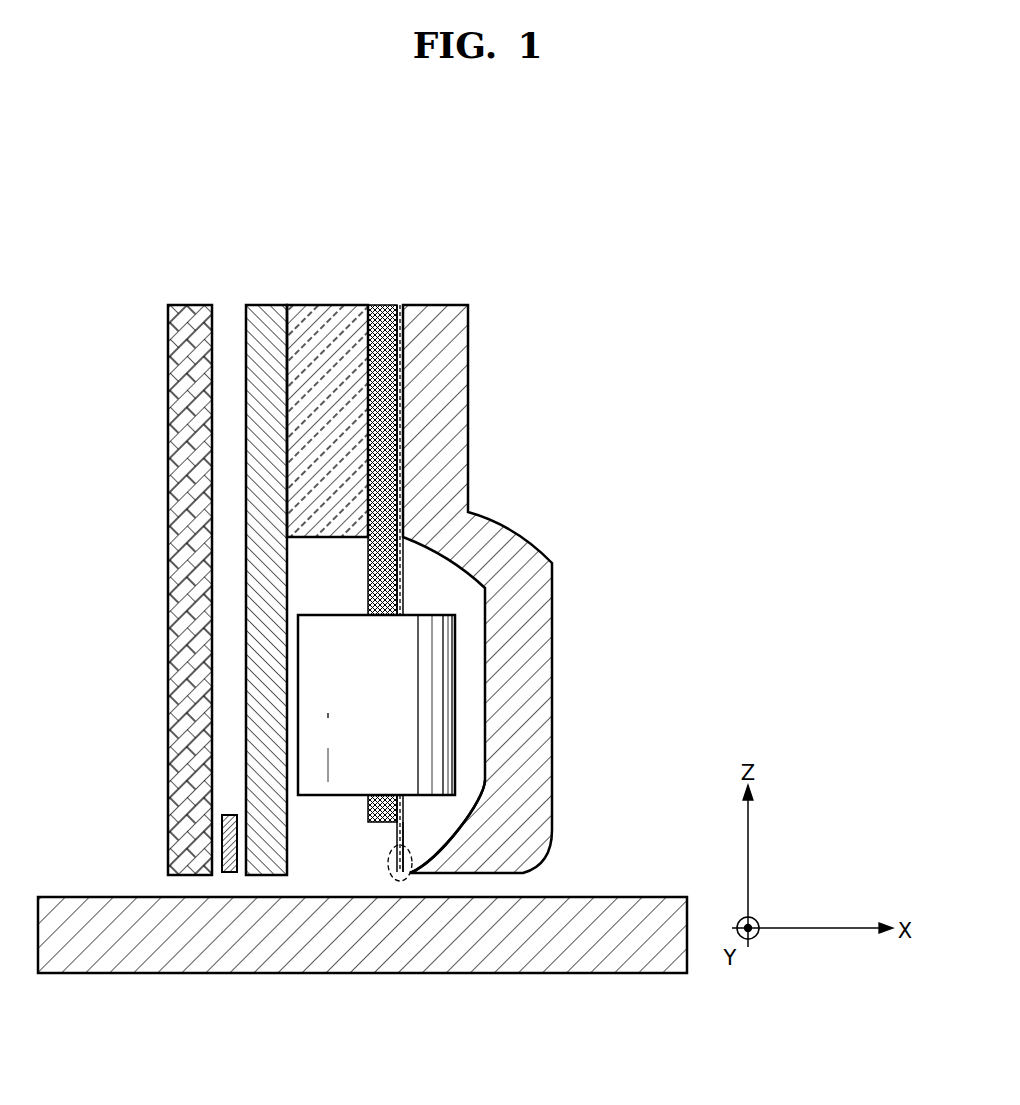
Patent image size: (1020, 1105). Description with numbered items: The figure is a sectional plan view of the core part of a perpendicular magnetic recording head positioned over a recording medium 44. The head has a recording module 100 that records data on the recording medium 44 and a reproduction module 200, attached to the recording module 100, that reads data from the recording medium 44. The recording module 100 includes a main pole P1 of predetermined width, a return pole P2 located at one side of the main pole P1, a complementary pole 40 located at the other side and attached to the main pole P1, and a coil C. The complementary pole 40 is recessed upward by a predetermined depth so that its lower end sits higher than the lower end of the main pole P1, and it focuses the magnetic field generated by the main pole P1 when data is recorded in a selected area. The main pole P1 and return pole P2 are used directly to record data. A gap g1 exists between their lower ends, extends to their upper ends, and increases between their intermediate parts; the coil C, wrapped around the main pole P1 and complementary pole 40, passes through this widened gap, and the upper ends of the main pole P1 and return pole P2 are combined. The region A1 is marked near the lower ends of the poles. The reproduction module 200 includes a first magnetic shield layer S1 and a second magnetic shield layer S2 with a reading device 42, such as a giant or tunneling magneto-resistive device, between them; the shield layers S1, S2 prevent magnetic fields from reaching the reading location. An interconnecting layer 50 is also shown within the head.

The reproduction module 200 is at (285, 288).
The recording module 100 is at (288, 288).
The interconnecting layer 50 is at (360, 412).
The complementary pole 40 is at (368, 808).
The reading device 42 is at (224, 838).
The recording medium 44 is at (203, 967).
The coil C is at (308, 632).
The first magnetic shield layer S1 is at (263, 715).
The second magnetic shield layer S2 is at (170, 770).
The main pole P1 is at (413, 823).
The return pole P2 is at (543, 668).
The gap g1 is at (432, 837).
The contact area A1 is at (390, 862).